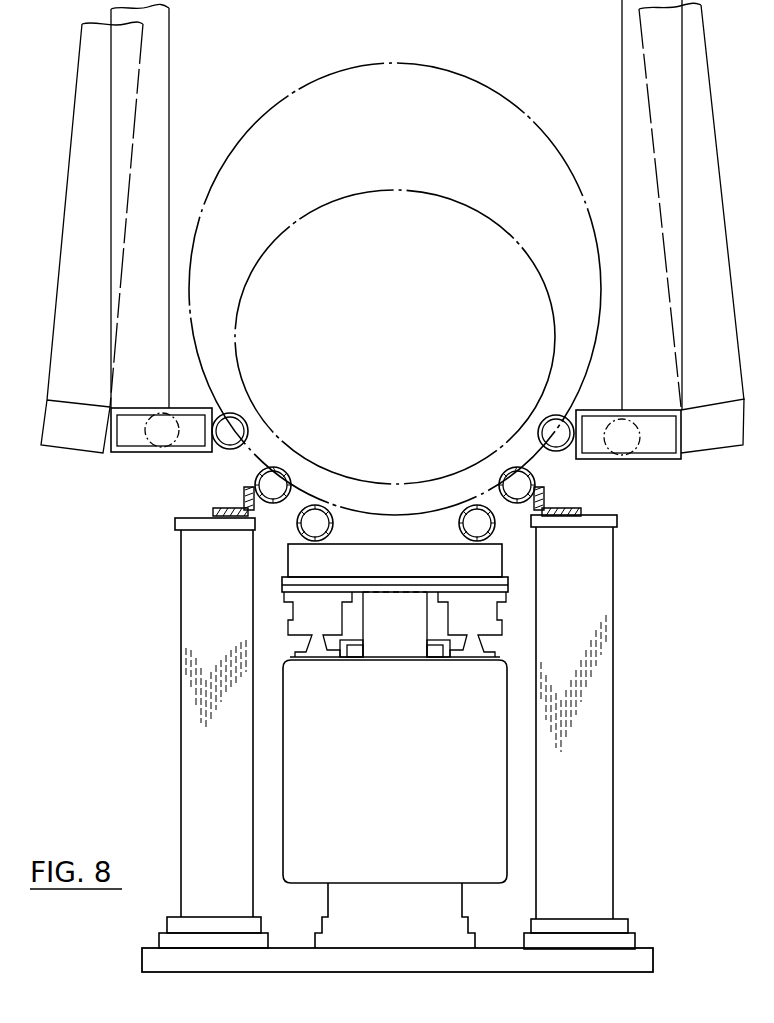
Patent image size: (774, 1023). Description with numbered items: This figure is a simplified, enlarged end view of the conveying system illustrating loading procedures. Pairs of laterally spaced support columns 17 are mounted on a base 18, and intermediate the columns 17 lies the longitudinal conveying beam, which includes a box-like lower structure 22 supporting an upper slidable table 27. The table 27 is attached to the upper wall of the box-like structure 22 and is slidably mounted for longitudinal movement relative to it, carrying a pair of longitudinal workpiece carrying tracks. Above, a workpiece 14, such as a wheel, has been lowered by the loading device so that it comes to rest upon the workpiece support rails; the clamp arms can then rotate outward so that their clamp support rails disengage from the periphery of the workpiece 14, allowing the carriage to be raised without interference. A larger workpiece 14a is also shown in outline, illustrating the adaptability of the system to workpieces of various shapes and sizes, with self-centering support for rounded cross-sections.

The workpiece 14a is at (497, 90).
The workpiece 14 is at (442, 196).
The slidable table 27 is at (508, 572).
The box-like lower structure 22 is at (283, 748).
The support column 17 is at (603, 737).
The base 18 is at (533, 963).